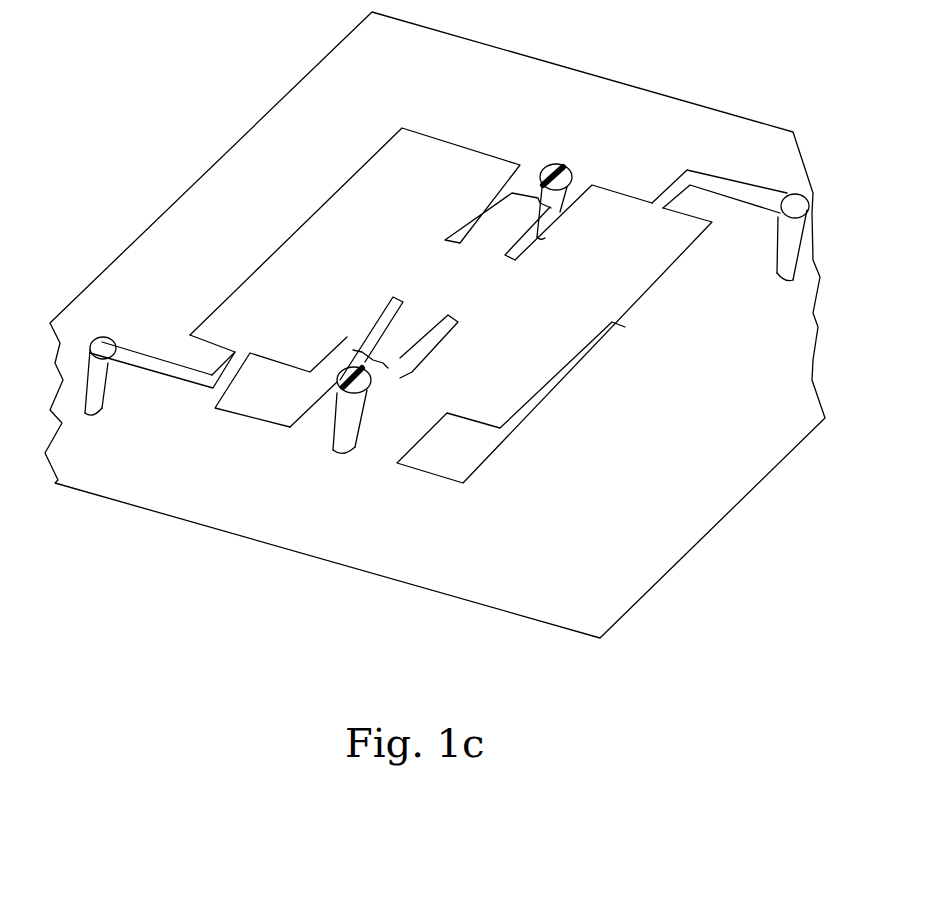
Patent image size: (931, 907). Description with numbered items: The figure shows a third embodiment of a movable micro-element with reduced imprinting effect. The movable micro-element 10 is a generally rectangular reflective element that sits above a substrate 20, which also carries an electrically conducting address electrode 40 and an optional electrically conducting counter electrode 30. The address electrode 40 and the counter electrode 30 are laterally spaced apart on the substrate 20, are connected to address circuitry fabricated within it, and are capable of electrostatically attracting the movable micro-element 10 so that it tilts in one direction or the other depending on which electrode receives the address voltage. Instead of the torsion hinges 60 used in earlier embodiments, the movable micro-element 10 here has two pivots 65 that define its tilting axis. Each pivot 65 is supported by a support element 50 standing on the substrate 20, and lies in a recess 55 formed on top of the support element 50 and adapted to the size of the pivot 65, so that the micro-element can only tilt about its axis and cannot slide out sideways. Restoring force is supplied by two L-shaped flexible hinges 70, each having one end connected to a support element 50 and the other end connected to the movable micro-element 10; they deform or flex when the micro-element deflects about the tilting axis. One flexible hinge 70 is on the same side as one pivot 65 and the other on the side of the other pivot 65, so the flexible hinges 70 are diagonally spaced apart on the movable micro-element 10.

The movable micro-element 10 is at (379, 229).
The substrate 20 is at (435, 325).
The counter electrode 30 is at (554, 364).
The address electrode 40 is at (277, 443).
The support element 50 is at (433, 391).
The recess 55 is at (345, 362).
The torsion hinge 60 is at (364, 222).
The pivot 65 is at (429, 346).
The flexible hinge 70 is at (438, 345).